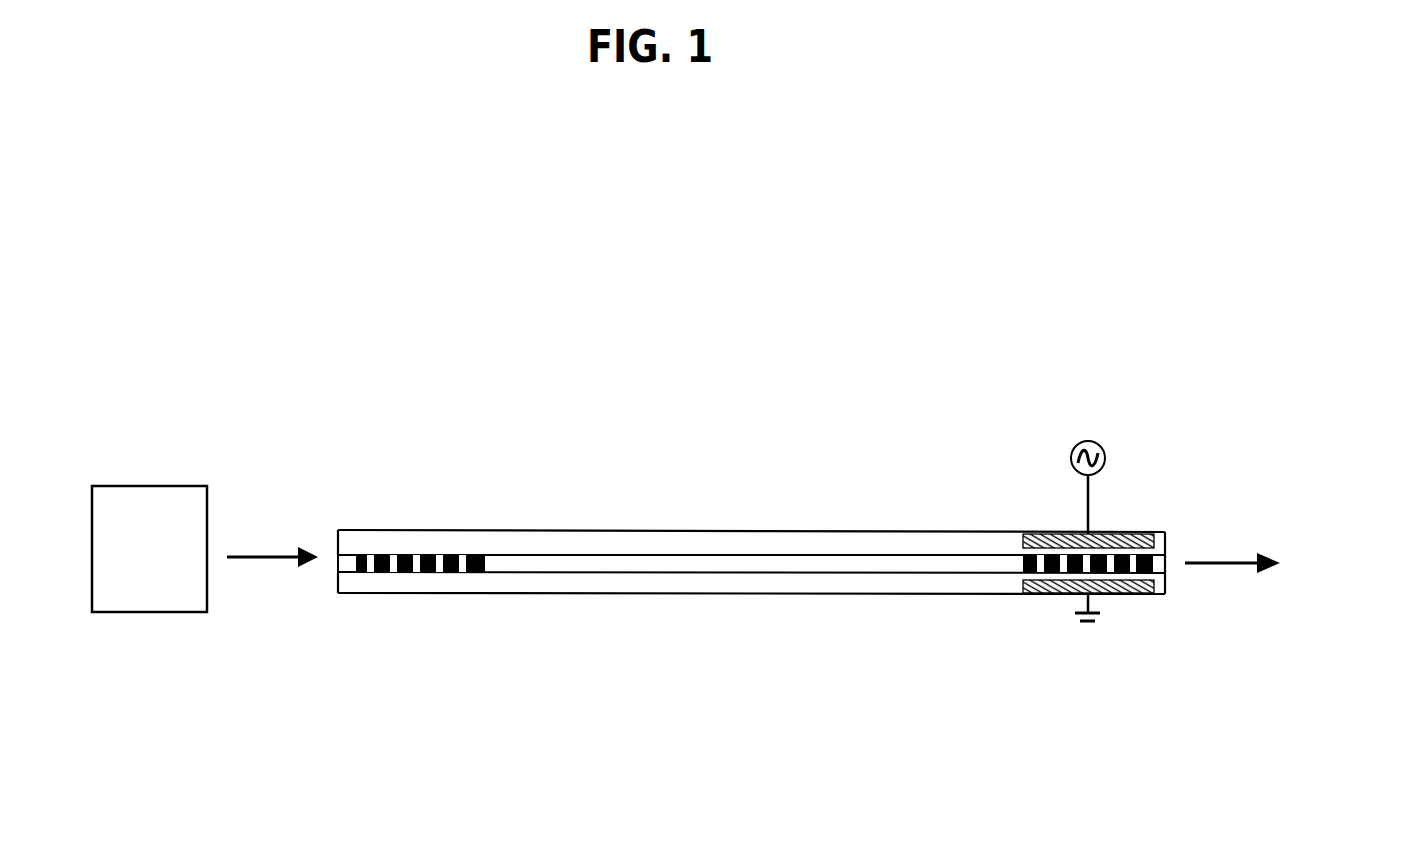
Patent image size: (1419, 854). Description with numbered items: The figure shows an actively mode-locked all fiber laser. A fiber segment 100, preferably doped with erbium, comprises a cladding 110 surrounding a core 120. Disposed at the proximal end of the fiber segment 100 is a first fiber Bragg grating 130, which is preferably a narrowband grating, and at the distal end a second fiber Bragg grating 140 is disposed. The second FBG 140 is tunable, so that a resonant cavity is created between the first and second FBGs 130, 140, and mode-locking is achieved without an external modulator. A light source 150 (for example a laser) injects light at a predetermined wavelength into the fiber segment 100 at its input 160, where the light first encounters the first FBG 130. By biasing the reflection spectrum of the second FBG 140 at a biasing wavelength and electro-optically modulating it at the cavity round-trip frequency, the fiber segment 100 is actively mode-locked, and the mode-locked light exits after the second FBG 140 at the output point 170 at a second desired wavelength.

The fiber segment 100 is at (718, 608).
The cladding 110 is at (338, 542).
The core 120 is at (337, 567).
The first fiber Bragg grating 130 is at (428, 533).
The second fiber Bragg grating 140 is at (1038, 525).
The light source 150 is at (153, 473).
The input 160 is at (270, 562).
The output point 170 is at (1242, 568).